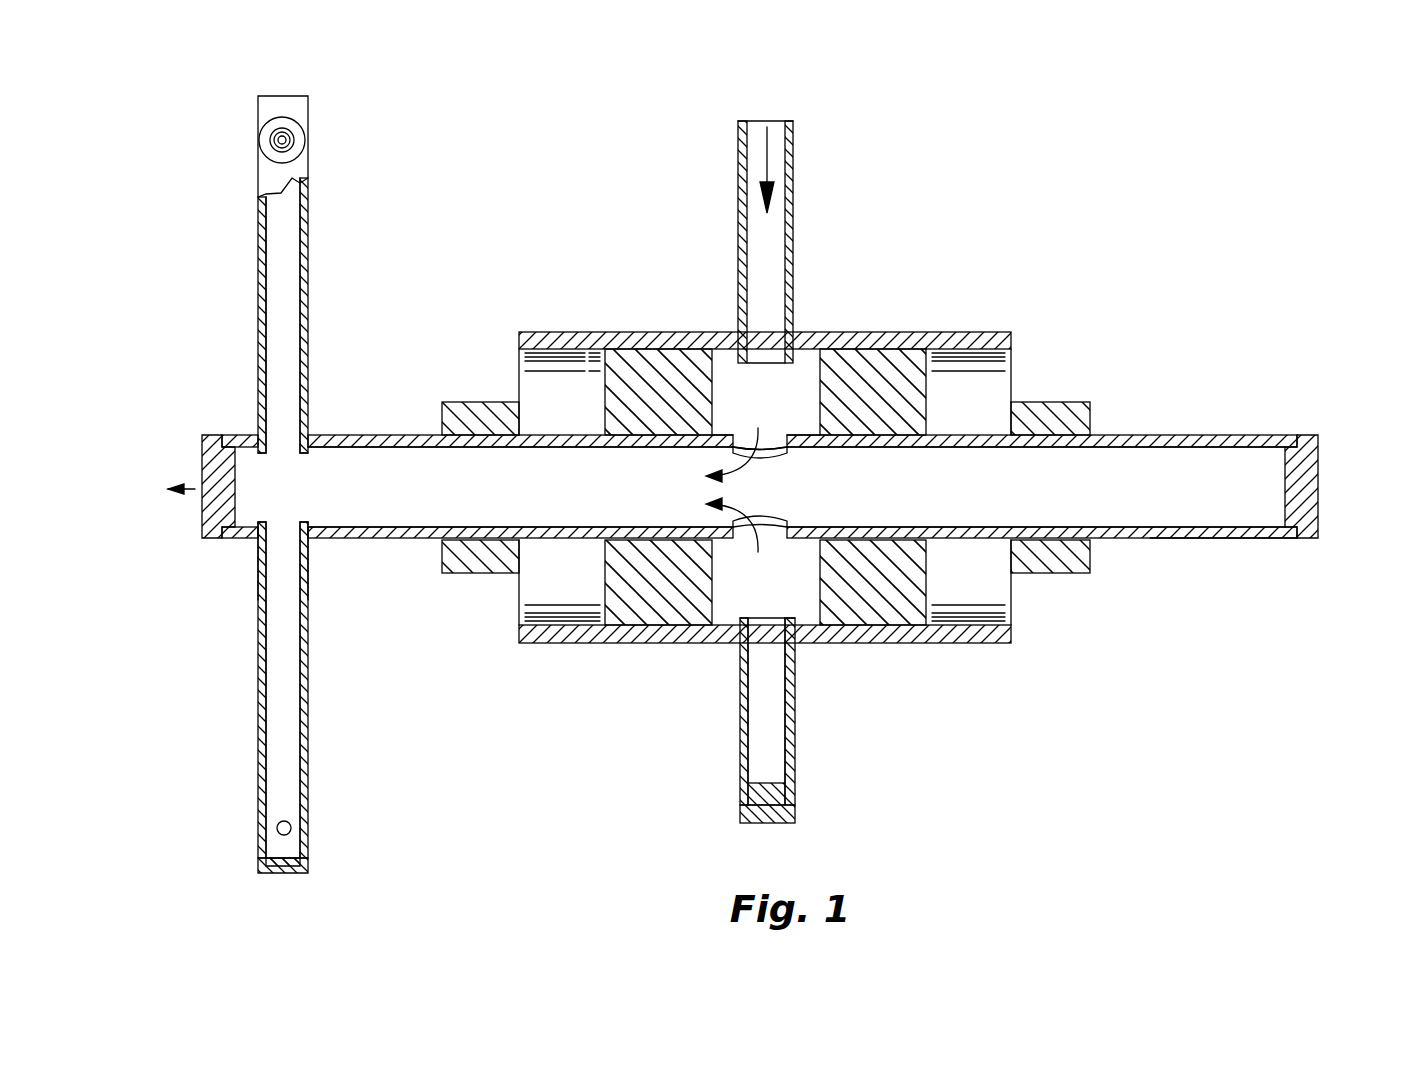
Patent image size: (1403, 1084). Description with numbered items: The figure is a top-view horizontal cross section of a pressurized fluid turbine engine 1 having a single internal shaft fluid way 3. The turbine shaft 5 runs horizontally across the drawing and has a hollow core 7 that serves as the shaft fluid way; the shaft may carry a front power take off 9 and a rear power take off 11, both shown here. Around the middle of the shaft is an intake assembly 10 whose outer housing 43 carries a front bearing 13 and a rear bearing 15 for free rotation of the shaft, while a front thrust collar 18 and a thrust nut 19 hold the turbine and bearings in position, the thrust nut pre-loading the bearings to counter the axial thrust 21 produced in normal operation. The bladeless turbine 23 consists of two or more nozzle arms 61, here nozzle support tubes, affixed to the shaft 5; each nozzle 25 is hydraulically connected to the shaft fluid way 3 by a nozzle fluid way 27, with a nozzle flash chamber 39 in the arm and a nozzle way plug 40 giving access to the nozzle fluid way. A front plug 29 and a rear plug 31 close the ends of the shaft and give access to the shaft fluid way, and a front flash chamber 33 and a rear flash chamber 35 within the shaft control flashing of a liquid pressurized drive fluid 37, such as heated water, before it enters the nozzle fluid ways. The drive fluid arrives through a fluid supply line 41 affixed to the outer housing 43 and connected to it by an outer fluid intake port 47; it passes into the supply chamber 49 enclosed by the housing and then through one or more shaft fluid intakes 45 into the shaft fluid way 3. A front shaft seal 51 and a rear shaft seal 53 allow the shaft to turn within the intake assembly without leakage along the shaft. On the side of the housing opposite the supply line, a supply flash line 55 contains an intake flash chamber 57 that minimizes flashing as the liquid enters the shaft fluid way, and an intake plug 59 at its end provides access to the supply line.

The pressurized fluid turbine engine 1 is at (970, 332).
The shaft fluid way 3 is at (425, 470).
The turbine shaft 5 is at (380, 540).
The hollow core 7 is at (385, 497).
The front power take off 9 is at (370, 435).
The intake assembly 10 is at (920, 332).
The rear power take off 11 is at (1258, 542).
The front bearing 13 is at (550, 580).
The rear bearing 15 is at (985, 600).
The front thrust collar 18 is at (480, 565).
The thrust nut 19 is at (1080, 402).
The axial thrust 21 is at (186, 492).
The bladeless turbine 23 is at (308, 314).
The nozzle 25 is at (306, 140).
The nozzle fluid way 27 is at (285, 252).
The front plug 29 is at (200, 470).
The rear plug 31 is at (1318, 490).
The front flash chamber 33 is at (262, 515).
The rear flash chamber 35 is at (1240, 500).
The pressurized drive fluid 37 is at (762, 181).
The nozzle flash chamber 39 is at (290, 100).
The nozzle way plug 40 is at (272, 875).
The fluid supply line 41 is at (793, 205).
The outer housing 43 is at (832, 349).
The shaft fluid intake 45 is at (790, 432).
The outer fluid intake port 47 is at (738, 330).
The supply chamber 49 is at (735, 385).
The front shaft seal 51 is at (627, 622).
The rear shaft seal 53 is at (865, 600).
The supply flash line 55 is at (795, 715).
The intake flash chamber 57 is at (768, 748).
The intake plug 59 is at (742, 822).
The nozzle arm 61 is at (308, 234).